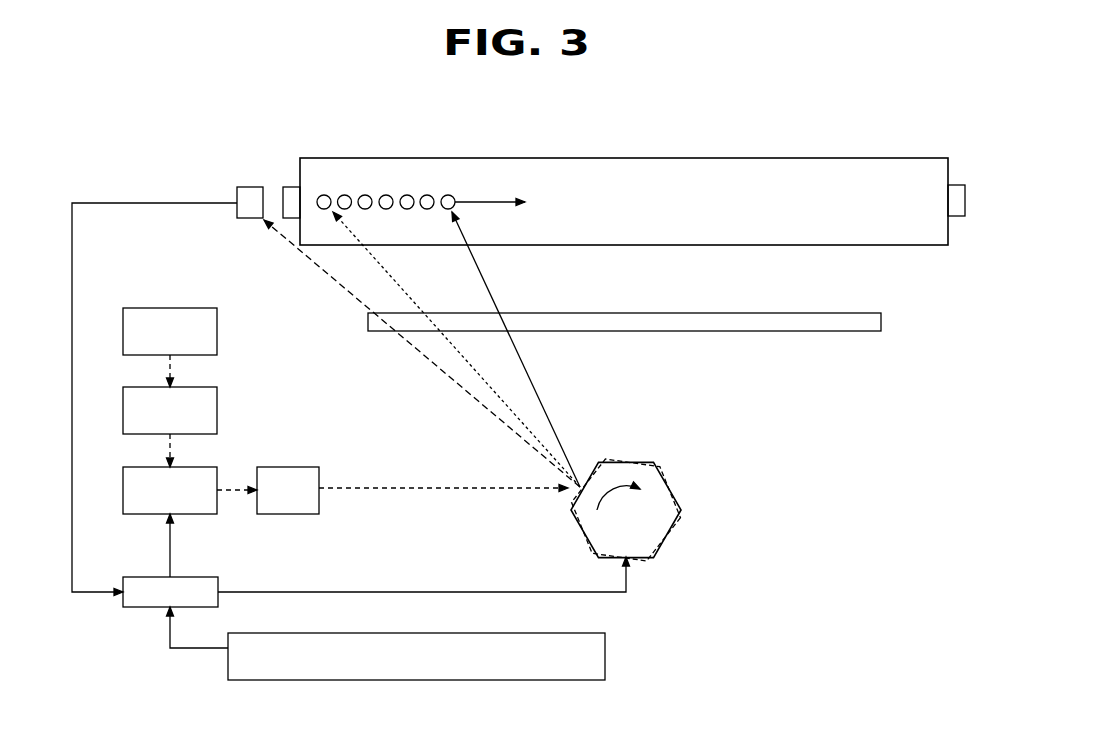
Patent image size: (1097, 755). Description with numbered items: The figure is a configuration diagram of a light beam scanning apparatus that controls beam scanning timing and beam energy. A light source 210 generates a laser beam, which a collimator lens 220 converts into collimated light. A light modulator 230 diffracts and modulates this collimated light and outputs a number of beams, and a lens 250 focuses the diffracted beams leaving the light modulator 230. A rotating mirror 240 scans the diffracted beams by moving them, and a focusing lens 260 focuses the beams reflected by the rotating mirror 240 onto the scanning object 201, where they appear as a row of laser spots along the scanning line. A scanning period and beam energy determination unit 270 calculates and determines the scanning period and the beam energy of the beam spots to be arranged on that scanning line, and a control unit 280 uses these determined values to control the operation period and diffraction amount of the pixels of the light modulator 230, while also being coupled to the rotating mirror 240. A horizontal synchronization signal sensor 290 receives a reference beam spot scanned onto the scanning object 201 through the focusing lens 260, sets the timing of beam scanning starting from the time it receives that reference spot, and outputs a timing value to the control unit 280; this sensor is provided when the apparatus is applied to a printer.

The scanning object 201 is at (666, 158).
The light source 210 is at (217, 320).
The collimator lens 220 is at (217, 400).
The light modulator 230 is at (217, 480).
The rotating mirror 240 is at (640, 463).
The lens 250 is at (305, 467).
The focusing lens 260 is at (881, 321).
The scanning period and beam energy determination unit 270 is at (285, 680).
The control unit 280 is at (218, 585).
The horizontal synchronization signal sensor 290 is at (250, 187).